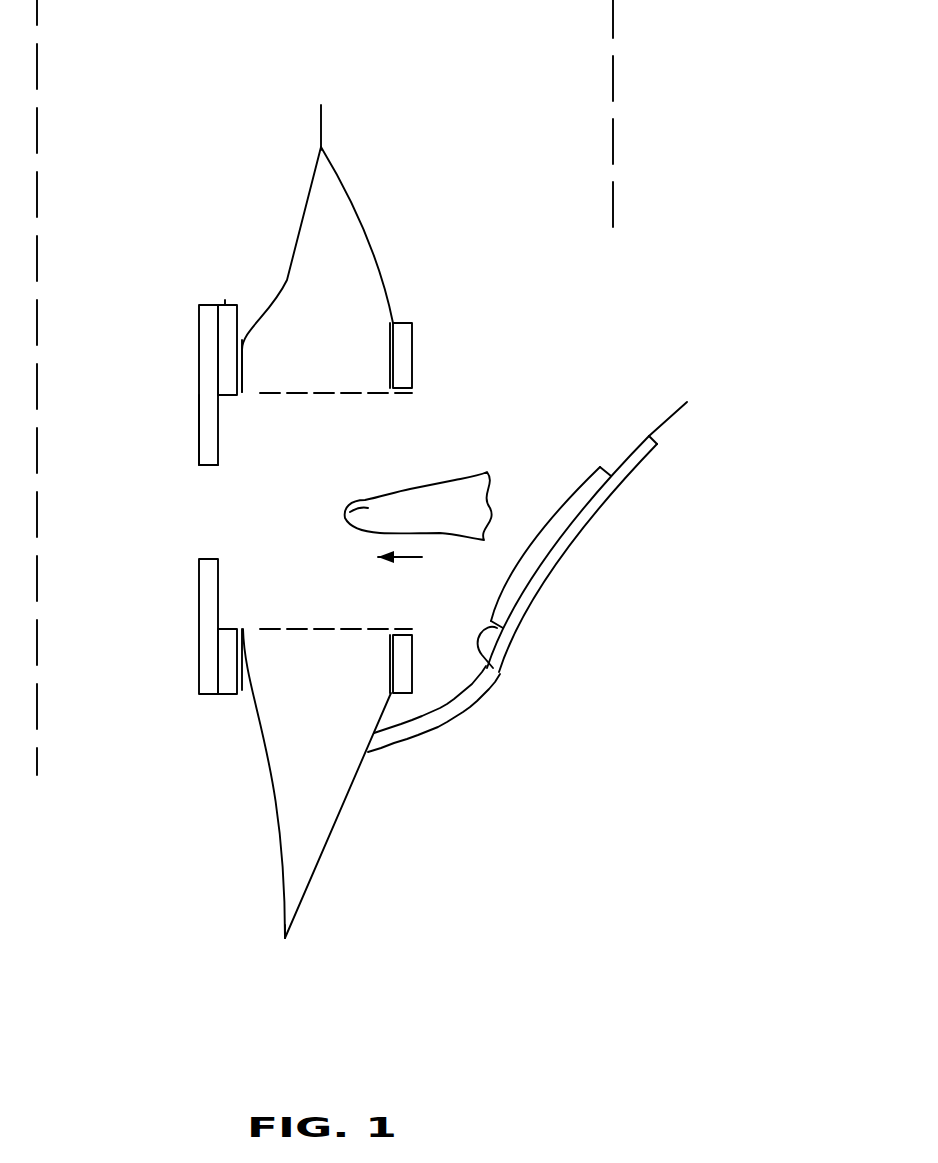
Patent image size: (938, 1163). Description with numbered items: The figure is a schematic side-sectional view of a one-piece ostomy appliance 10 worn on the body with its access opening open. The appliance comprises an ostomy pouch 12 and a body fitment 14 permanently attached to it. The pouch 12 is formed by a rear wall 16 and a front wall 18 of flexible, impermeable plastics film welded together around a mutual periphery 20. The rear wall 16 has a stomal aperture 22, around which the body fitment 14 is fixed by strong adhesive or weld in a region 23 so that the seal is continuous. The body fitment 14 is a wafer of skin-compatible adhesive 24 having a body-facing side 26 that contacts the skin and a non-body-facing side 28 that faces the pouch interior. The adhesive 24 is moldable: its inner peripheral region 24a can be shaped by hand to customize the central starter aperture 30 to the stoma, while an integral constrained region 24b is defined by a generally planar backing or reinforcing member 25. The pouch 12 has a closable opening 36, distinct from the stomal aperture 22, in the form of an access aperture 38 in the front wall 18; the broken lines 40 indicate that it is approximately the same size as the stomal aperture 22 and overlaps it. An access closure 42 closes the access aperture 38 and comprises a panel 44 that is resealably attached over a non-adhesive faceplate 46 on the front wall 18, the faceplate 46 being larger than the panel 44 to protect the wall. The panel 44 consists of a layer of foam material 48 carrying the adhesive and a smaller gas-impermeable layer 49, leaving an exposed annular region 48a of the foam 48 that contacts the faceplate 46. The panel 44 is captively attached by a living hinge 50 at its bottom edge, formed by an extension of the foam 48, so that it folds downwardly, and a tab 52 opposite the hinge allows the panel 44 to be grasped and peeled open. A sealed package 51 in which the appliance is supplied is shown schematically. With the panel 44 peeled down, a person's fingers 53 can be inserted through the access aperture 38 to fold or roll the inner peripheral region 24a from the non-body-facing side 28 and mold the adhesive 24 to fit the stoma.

The one-piece ostomy appliance 10 is at (405, 90).
The ostomy pouch 12 is at (362, 162).
The body fitment 14 is at (203, 260).
The rear wall 16 is at (310, 195).
The front wall 18 is at (360, 216).
The mutual periphery 20 is at (322, 123).
The stomal aperture 22 is at (253, 437).
The region 23 is at (245, 377).
The adhesive 24 is at (199, 395).
The inner peripheral region 24a is at (199, 447).
The constrained region 24b is at (198, 350).
The backing or reinforcing member 25 is at (225, 305).
The body-facing side 26 is at (182, 613).
The non-body-facing side 28 is at (242, 602).
The central starter aperture 30 is at (208, 515).
The closable opening 36 is at (467, 343).
The access aperture 38 is at (435, 423).
The broken lines 40 is at (323, 395).
The access closure 42 is at (588, 548).
The panel 44 is at (612, 495).
The faceplate 46 is at (400, 350).
The foam material 48 is at (533, 600).
The peripheral circumferential region 48a is at (617, 463).
The impermeable layer 49 is at (557, 517).
The living hinge 50 is at (433, 722).
The sealed package 51 is at (37, 88).
The tab 52 is at (673, 415).
The fingers 53 is at (435, 523).